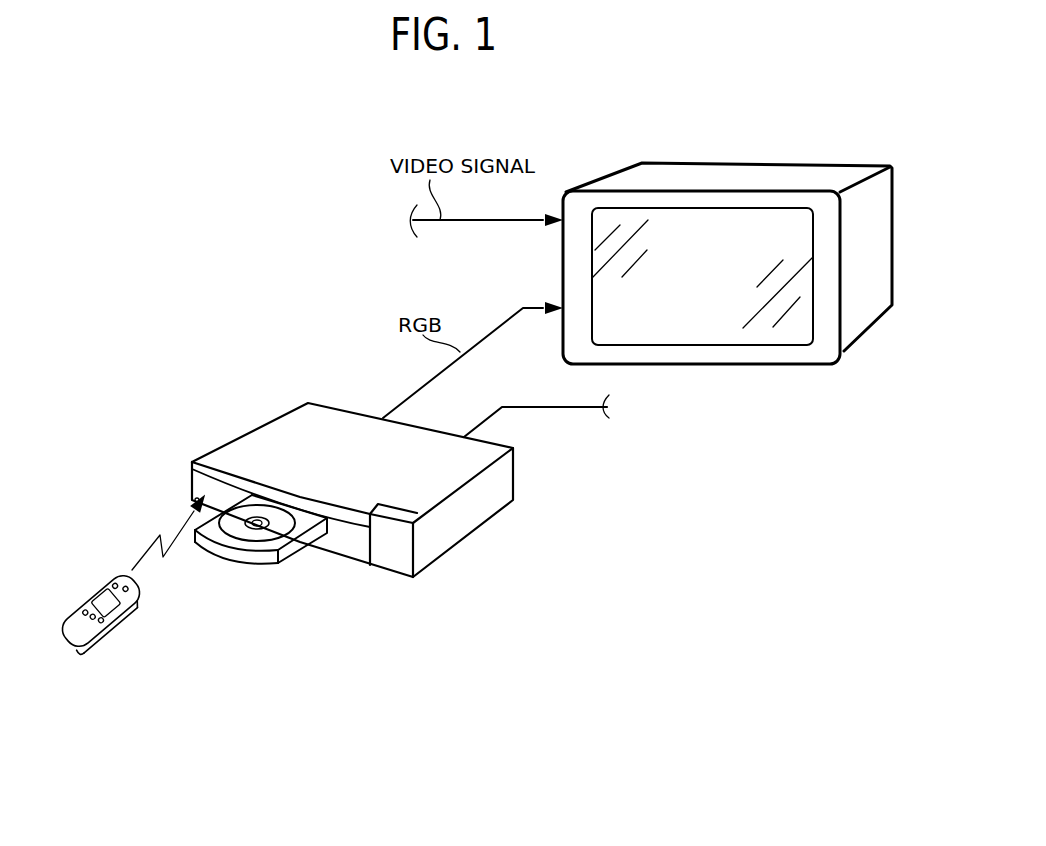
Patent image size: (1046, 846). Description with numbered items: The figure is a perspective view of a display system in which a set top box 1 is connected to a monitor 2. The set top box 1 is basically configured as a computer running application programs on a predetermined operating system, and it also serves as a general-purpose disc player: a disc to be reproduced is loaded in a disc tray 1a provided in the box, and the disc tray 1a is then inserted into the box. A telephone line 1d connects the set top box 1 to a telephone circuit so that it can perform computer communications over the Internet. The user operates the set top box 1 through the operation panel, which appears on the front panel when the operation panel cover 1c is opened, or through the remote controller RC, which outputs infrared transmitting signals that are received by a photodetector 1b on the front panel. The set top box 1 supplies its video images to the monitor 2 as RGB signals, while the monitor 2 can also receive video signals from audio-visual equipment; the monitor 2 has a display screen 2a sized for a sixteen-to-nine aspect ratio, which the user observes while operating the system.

The set top box 1 is at (367, 521).
The disc tray 1a is at (290, 557).
The photodetector 1b is at (193, 502).
The operation panel cover 1c is at (392, 548).
The telephone line 1d is at (573, 407).
The monitor 2 is at (727, 242).
The display screen 2a is at (715, 330).
The remote controller RC is at (103, 638).